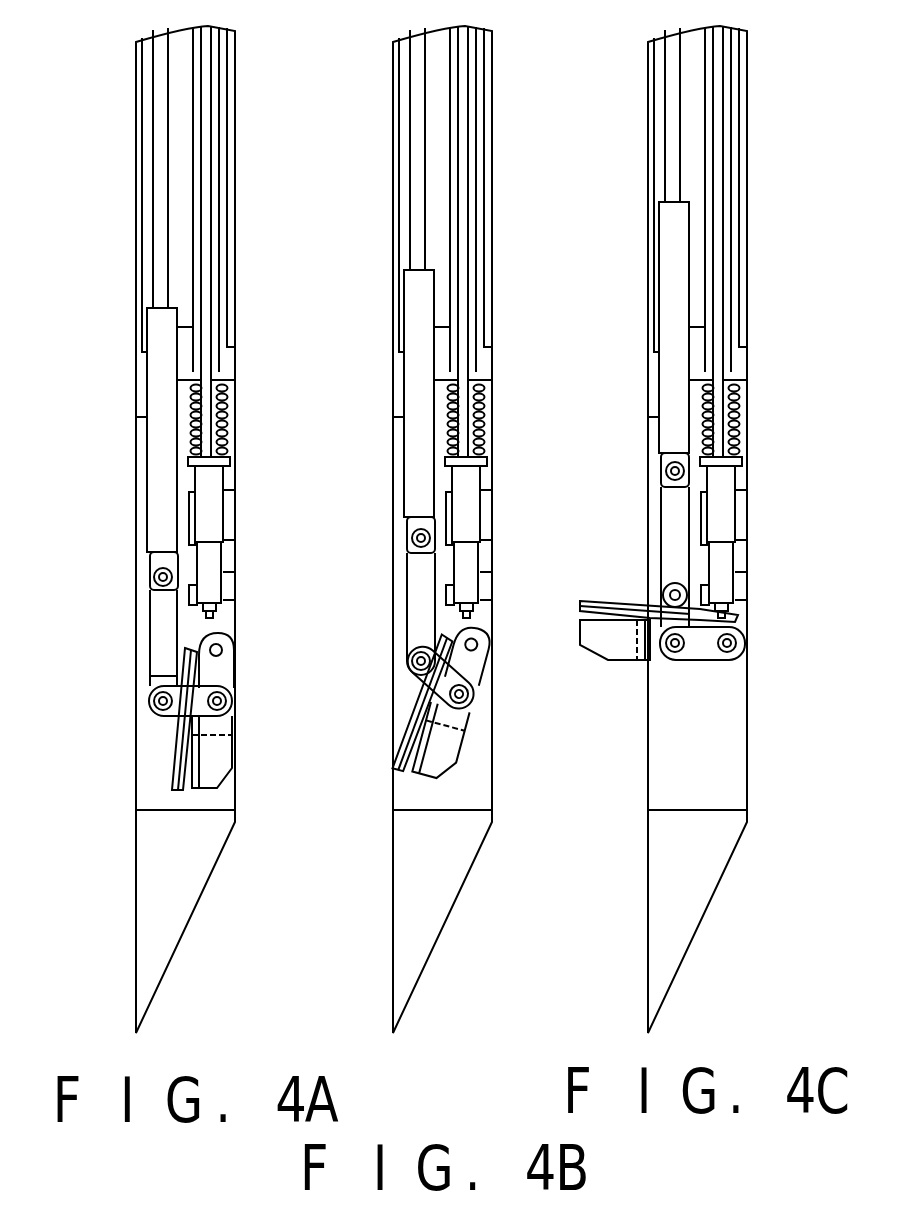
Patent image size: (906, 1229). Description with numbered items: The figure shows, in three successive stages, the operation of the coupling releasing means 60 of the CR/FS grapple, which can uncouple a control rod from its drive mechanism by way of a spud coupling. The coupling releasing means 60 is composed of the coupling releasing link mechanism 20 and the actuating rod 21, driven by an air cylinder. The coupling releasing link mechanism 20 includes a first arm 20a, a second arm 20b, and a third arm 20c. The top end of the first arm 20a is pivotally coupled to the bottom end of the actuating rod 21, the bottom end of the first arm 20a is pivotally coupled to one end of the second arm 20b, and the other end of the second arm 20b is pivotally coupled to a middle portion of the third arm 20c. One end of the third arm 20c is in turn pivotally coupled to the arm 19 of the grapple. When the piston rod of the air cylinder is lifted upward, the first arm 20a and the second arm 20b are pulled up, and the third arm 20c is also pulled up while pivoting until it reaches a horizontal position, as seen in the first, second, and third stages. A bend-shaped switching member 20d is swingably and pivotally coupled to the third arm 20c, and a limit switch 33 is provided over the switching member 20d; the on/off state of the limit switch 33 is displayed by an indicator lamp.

In FIG. 4A, the arm 19 is at (146, 462).
In FIG. 4B, the arm 19 is at (404, 462).
In FIG. 4C, the arm 19 is at (659, 305).
In FIG. 4A, the coupling releasing link mechanism 20 is at (166, 671).
In FIG. 4A, the first arm 20a is at (160, 640).
In FIG. 4B, the first arm 20a is at (421, 596).
In FIG. 4C, the first arm 20a is at (685, 555).
In FIG. 4A, the second arm 20b is at (205, 690).
In FIG. 4B, the second arm 20b is at (447, 669).
In FIG. 4C, the second arm 20b is at (690, 644).
In FIG. 4A, the third arm 20c is at (222, 755).
In FIG. 4B, the third arm 20c is at (440, 742).
In FIG. 4C, the third arm 20c is at (600, 645).
In FIG. 4A, the switching member 20d is at (180, 752).
In FIG. 4B, the switching member 20d is at (396, 742).
In FIG. 4C, the switching member 20d is at (598, 601).
In FIG. 4A, the actuating rod 21 is at (152, 190).
In FIG. 4B, the actuating rod 21 is at (412, 174).
In FIG. 4C, the actuating rod 21 is at (665, 131).
In FIG. 4A, the limit switch 33 is at (215, 515).
In FIG. 4B, the limit switch 33 is at (472, 512).
In FIG. 4C, the limit switch 33 is at (740, 503).
In FIG. 4A, the coupling releasing means 60 is at (124, 283).